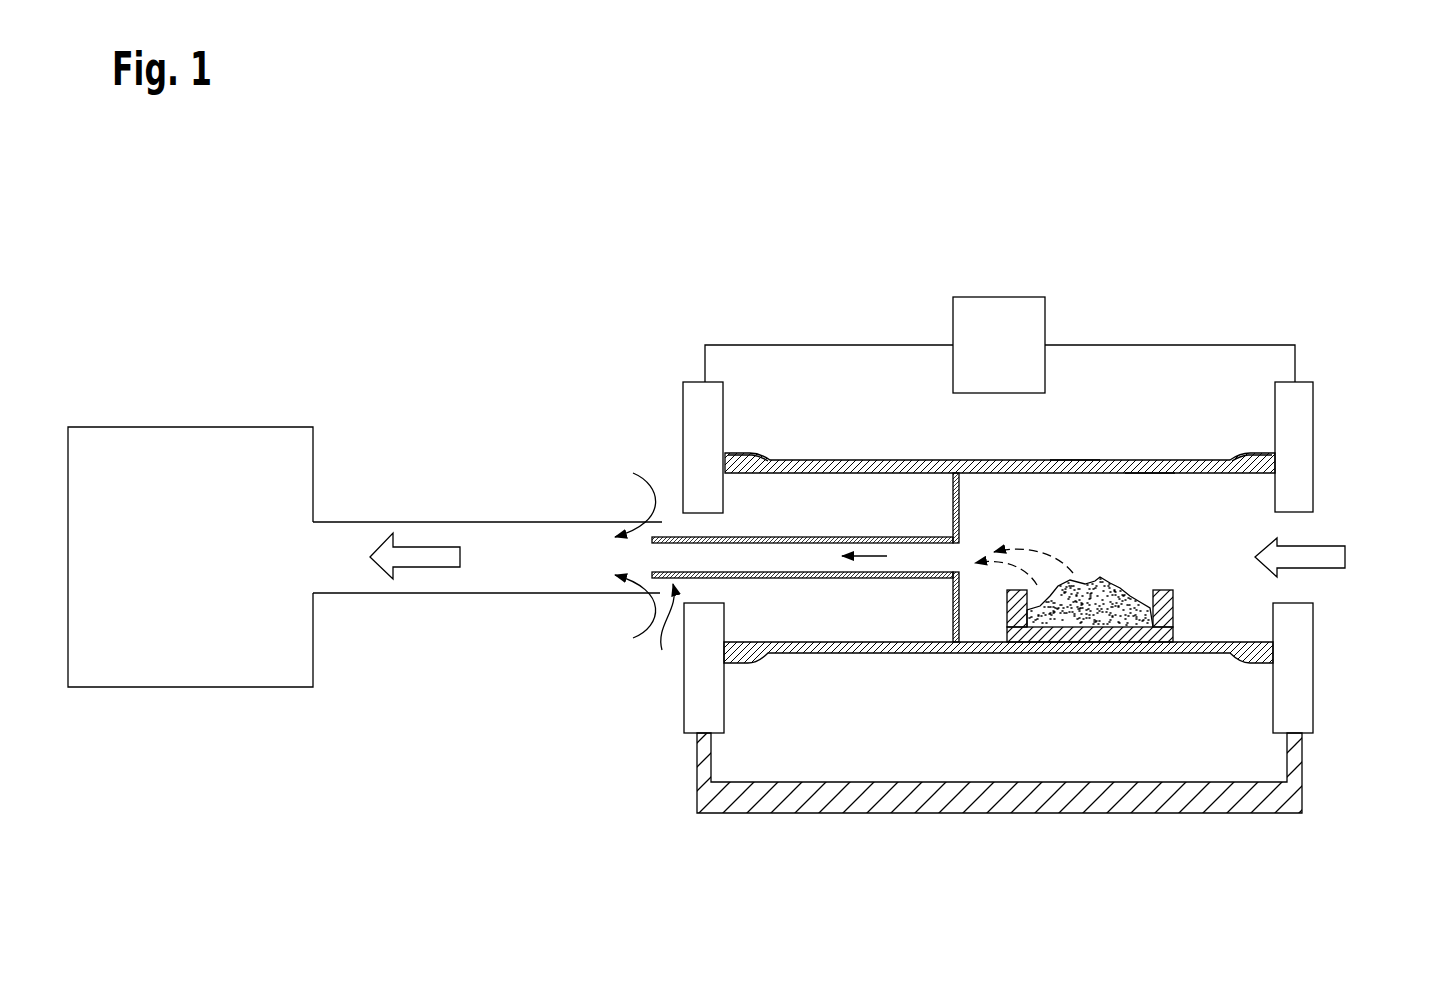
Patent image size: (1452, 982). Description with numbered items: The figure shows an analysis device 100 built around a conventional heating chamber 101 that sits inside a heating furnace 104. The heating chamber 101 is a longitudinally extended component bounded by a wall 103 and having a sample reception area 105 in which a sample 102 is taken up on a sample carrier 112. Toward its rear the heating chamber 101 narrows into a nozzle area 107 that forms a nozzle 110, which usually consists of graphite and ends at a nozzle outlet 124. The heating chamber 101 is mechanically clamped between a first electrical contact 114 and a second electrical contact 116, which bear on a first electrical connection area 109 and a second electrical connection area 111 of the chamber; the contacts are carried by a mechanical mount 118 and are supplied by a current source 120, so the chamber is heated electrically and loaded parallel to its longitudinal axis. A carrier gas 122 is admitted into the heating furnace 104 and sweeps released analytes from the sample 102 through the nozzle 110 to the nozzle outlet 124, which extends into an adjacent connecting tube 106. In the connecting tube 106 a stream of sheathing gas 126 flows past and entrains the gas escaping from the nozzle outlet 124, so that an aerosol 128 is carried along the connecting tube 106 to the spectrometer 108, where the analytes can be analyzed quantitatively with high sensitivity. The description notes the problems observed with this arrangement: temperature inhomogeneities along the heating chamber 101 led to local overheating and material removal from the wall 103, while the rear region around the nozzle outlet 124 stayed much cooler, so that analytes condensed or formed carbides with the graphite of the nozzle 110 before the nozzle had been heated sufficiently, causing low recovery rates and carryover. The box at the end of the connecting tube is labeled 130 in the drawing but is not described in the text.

The analysis device 100 is at (535, 250).
The heating chamber 101 is at (885, 454).
The sample 102 is at (1100, 577).
The wall 103 is at (1077, 470).
The heating furnace 104 is at (1172, 307).
The sample reception area 105 is at (1145, 518).
The connecting tube 106 is at (450, 514).
The nozzle area 107 is at (914, 558).
The spectrometer 108 is at (203, 419).
The first electrical connection area 109 is at (738, 462).
The nozzle 110 is at (831, 580).
The second electrical connection area 111 is at (1263, 465).
The sample carrier 112 is at (1179, 597).
The first electrical contact 114 is at (671, 407).
The second electrical contact 116 is at (1323, 409).
The mechanical mount 118 is at (1303, 816).
The current source 120 is at (1000, 307).
The carrier gas 122 is at (1323, 542).
The nozzle outlet 124 is at (658, 638).
The sheathing gas 126 is at (637, 478).
The aerosol 128 is at (430, 567).
The evaluation unit 130 is at (213, 660).